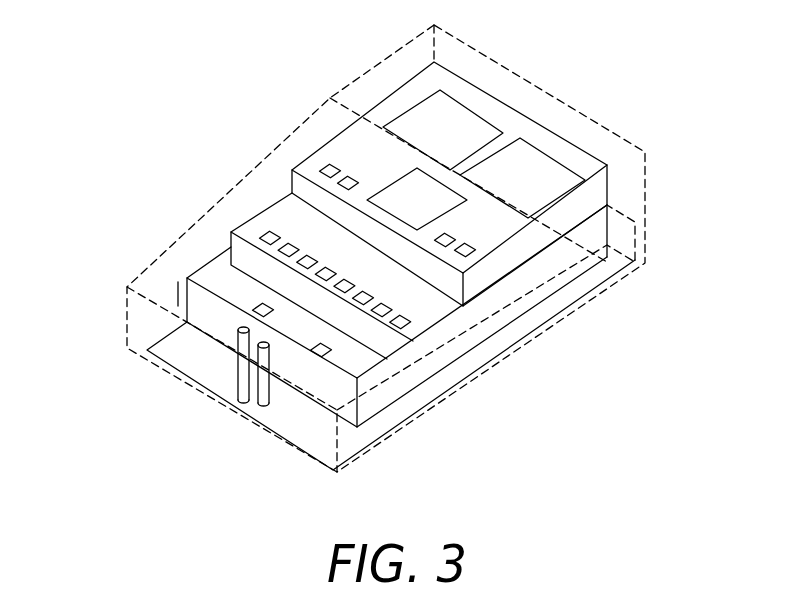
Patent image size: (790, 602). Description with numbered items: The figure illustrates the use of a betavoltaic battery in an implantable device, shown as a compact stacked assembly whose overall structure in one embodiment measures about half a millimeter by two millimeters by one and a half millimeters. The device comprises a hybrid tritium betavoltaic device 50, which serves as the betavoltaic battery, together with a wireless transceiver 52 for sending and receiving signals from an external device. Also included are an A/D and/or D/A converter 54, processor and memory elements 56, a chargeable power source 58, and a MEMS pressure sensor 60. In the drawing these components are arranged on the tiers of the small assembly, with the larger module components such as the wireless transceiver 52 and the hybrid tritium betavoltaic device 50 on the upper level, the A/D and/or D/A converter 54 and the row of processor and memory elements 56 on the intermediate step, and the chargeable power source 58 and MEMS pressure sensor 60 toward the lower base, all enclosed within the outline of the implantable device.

The hybrid tritium betavoltaic device 50 is at (405, 192).
The wireless transceiver 52 is at (421, 117).
The A/D and/or D/A converter 54 is at (303, 220).
The processor and memory elements 56 is at (280, 250).
The chargeable power source 58 is at (218, 288).
The MEMS pressure sensor 60 is at (147, 350).